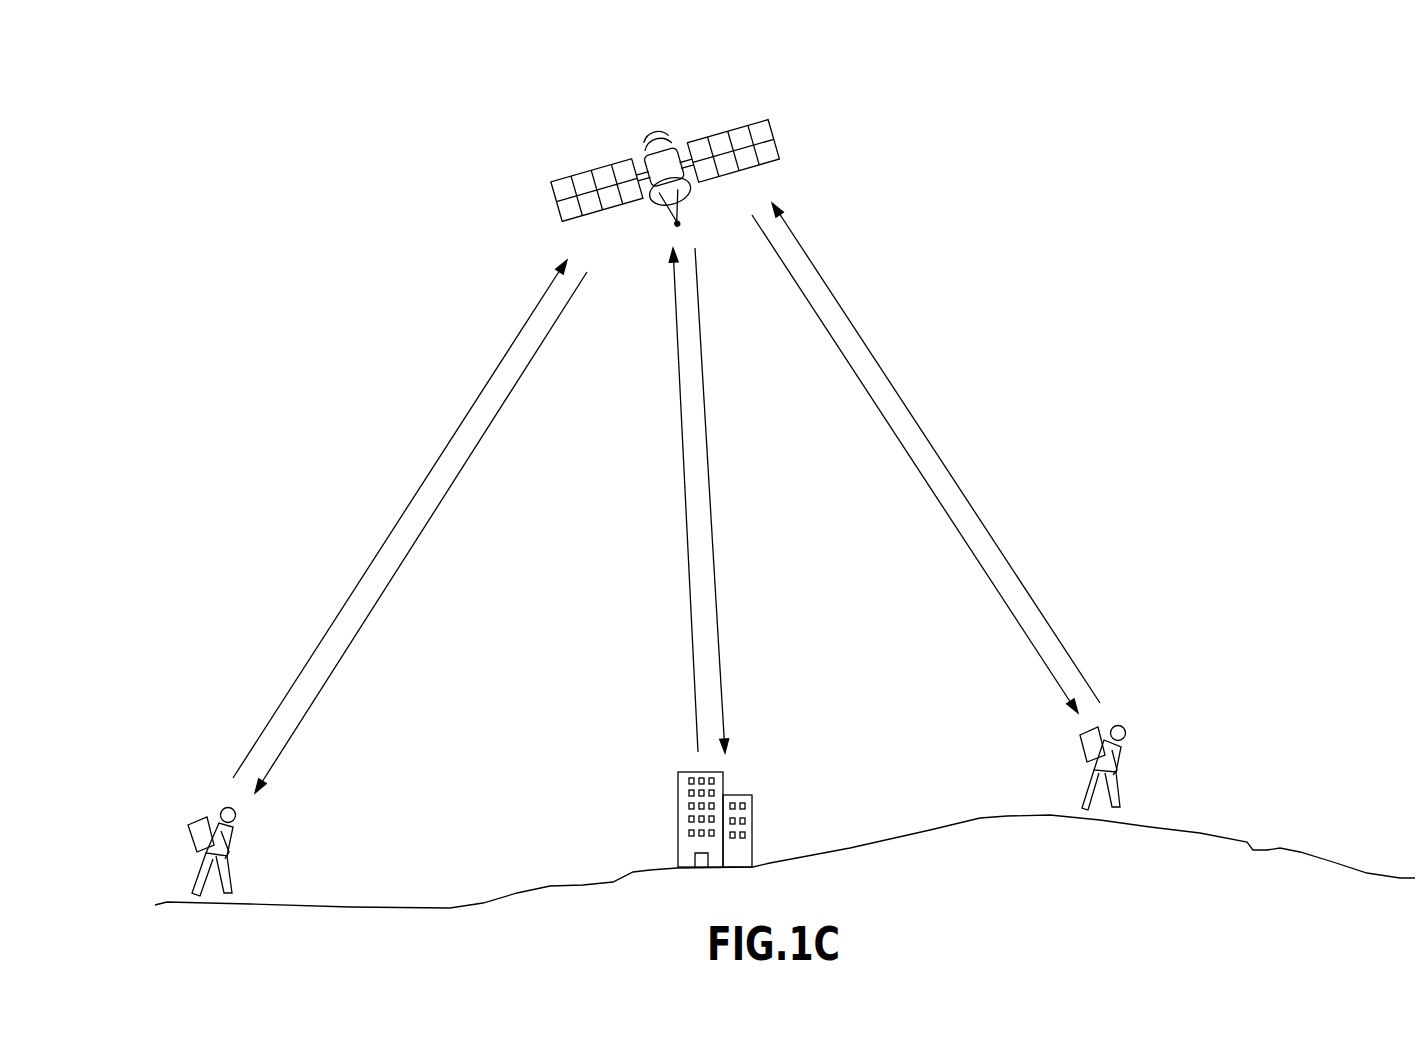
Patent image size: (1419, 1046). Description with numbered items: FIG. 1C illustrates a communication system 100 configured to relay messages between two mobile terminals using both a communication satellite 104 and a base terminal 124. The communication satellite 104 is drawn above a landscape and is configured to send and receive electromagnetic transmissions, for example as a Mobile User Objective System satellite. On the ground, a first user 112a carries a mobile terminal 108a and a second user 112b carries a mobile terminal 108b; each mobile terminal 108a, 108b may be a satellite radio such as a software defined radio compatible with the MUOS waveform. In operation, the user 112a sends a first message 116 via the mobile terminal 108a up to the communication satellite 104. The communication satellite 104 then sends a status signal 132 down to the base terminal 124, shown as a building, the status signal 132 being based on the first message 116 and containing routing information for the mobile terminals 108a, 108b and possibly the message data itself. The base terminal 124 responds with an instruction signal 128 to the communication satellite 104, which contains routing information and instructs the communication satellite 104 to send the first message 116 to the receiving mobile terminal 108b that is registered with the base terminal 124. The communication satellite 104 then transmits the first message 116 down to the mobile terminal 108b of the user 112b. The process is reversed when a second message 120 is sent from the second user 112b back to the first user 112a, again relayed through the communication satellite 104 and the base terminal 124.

The communication system 100 is at (221, 89).
The communication satellite 104 is at (775, 132).
The mobile terminal 108a is at (220, 805).
The mobile terminal 108b is at (1108, 738).
The user 112a is at (200, 825).
The user 112b is at (1087, 765).
The first message 116 is at (402, 515).
The second message 120 is at (380, 595).
The base terminal 124 is at (733, 802).
The instruction signal 128 is at (688, 593).
The status signal 132 is at (717, 583).